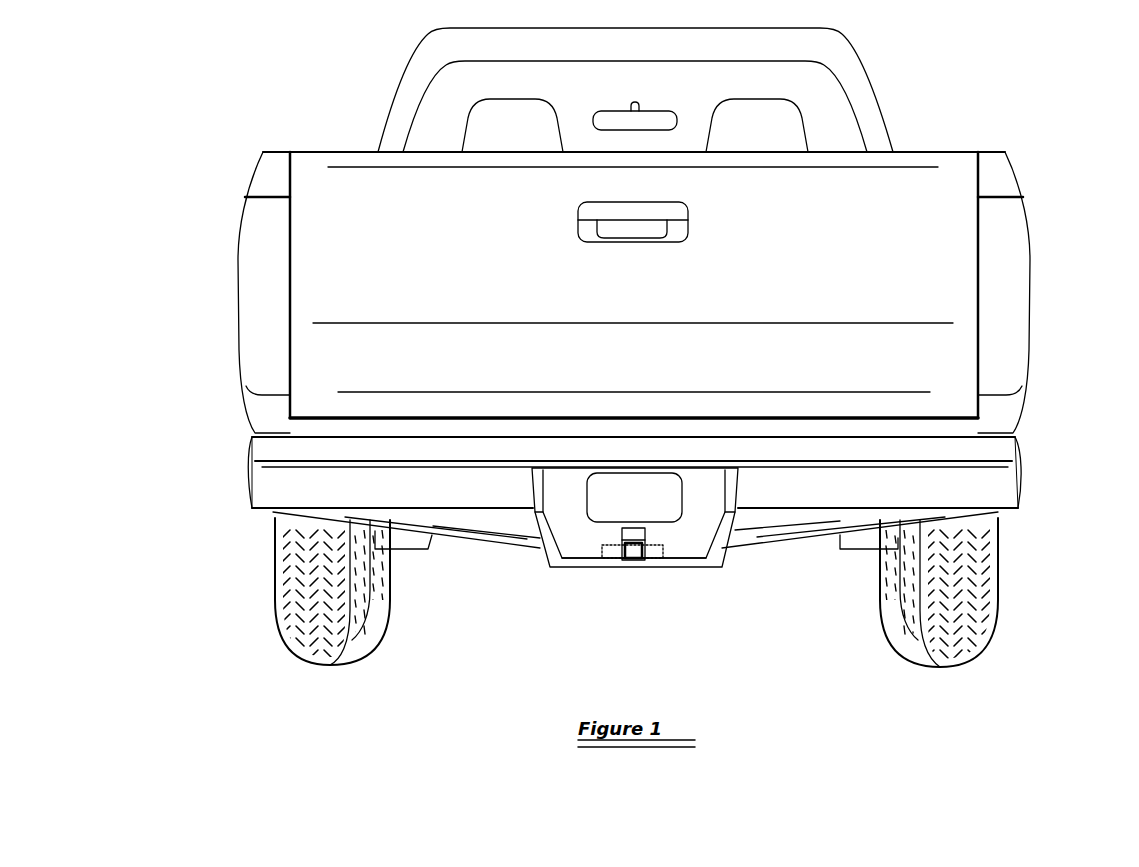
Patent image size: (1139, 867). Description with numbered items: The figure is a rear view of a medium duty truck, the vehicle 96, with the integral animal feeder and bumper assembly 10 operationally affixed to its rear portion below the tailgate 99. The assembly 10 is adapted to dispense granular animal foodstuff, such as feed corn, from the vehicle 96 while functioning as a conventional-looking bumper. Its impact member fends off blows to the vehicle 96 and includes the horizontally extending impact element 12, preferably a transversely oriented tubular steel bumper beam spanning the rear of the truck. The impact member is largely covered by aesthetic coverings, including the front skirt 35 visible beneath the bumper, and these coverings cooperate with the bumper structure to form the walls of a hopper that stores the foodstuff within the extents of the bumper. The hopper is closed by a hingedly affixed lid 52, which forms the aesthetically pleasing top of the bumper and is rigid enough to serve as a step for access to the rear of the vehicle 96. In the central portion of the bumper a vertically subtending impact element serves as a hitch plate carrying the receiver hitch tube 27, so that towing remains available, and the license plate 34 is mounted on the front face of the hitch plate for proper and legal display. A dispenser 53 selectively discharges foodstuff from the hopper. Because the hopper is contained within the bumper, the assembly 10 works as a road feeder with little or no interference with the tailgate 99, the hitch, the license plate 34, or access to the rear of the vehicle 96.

The integral animal feeder and bumper assembly 10 is at (1048, 472).
The horizontally extending impact element 12 is at (995, 490).
The receiver hitch tube 27 is at (645, 540).
The license plate 34 is at (655, 476).
The front skirt 35 is at (505, 527).
The lid 52 is at (358, 452).
The dispenser 53 is at (673, 553).
The vehicle 96 is at (219, 153).
The tailgate 99 is at (903, 197).